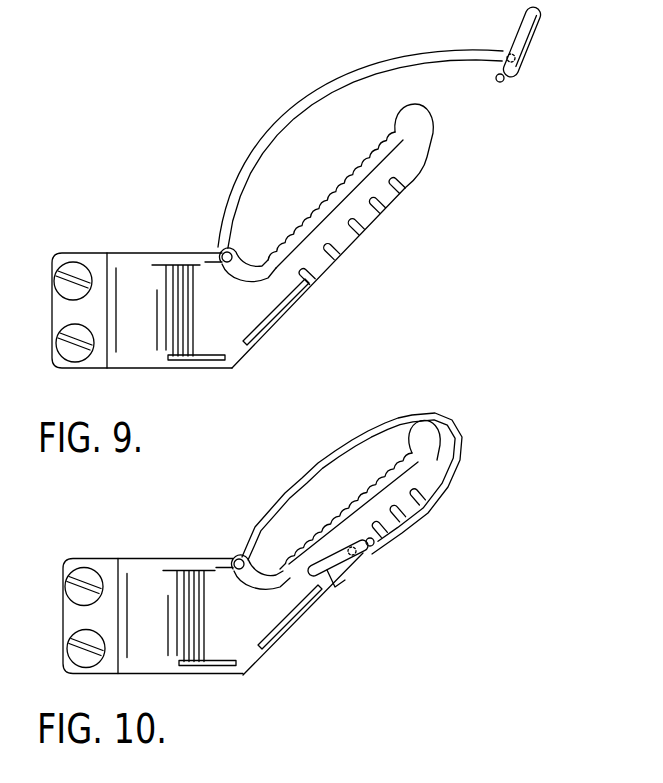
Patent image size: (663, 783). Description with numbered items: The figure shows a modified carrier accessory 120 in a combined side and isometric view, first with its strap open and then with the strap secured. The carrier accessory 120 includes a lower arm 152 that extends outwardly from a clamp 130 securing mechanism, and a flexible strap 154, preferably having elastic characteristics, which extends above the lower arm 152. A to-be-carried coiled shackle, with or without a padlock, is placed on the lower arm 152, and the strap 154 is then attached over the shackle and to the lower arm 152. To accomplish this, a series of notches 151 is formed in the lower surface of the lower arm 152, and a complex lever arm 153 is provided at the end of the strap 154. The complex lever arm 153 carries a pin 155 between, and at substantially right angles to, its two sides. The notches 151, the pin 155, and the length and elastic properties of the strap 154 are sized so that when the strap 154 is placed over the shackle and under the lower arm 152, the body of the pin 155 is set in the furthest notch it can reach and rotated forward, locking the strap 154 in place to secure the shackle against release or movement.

In FIG. 9, the carrier accessory 120 is at (187, 235).
In FIG. 10, the carrier accessory 120 is at (218, 545).
In FIG. 9, the clamp 130 is at (143, 345).
In FIG. 10, the clamp 130 is at (158, 660).
In FIG. 9, the notches 151 is at (383, 203).
In FIG. 10, the notches 151 is at (330, 580).
In FIG. 9, the lower arm 152 is at (423, 145).
In FIG. 10, the lower arm 152 is at (440, 457).
In FIG. 9, the complex lever arm 153 is at (537, 58).
In FIG. 10, the complex lever arm 153 is at (353, 570).
In FIG. 9, the flexible strap 154 is at (382, 60).
In FIG. 10, the flexible strap 154 is at (374, 425).
In FIG. 9, the pin 155 is at (505, 82).
In FIG. 10, the pin 155 is at (375, 547).